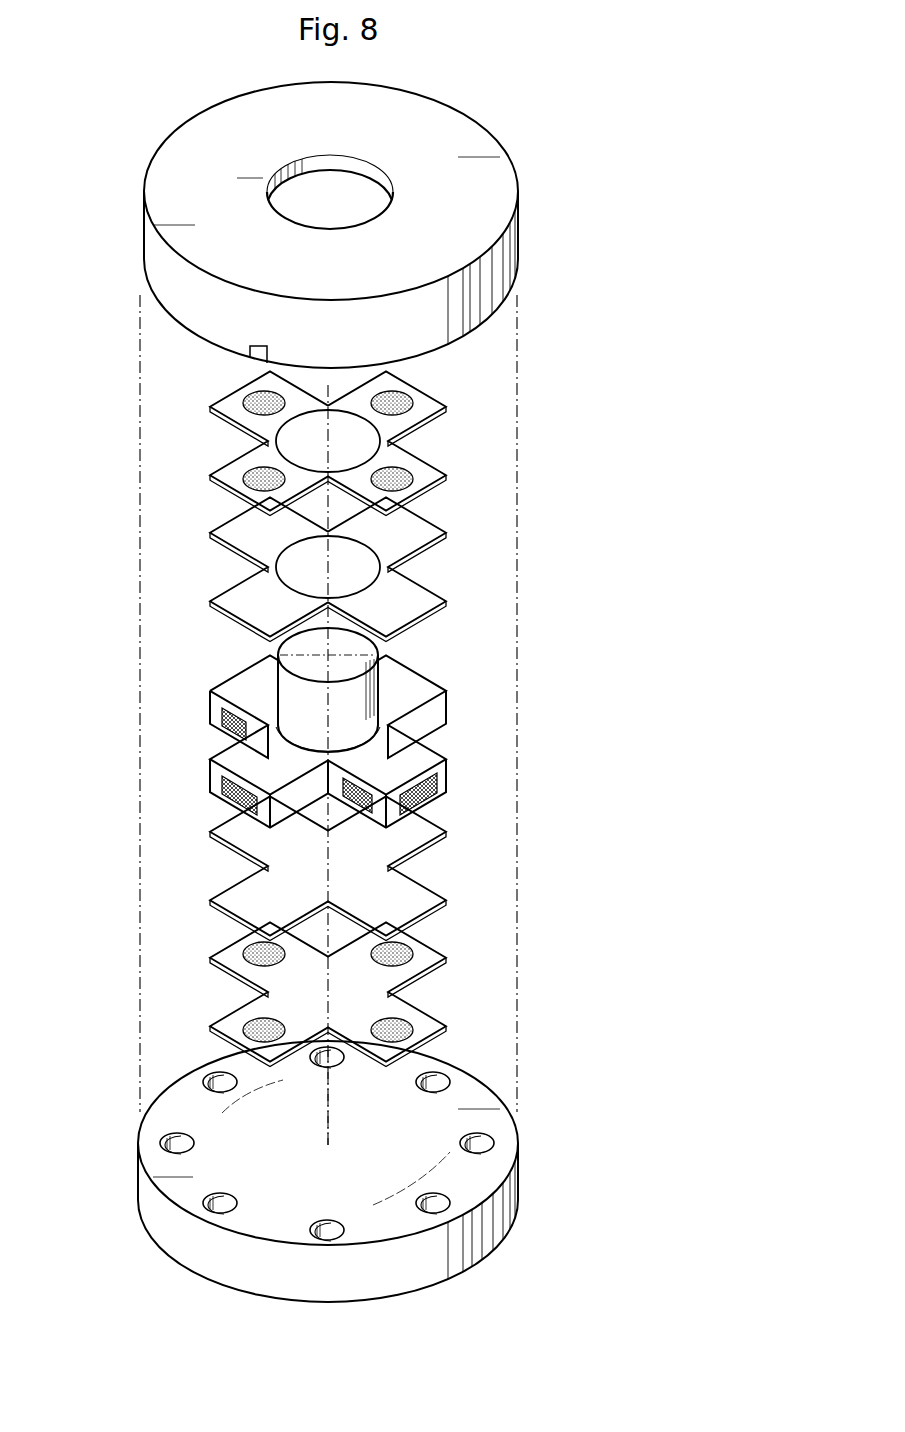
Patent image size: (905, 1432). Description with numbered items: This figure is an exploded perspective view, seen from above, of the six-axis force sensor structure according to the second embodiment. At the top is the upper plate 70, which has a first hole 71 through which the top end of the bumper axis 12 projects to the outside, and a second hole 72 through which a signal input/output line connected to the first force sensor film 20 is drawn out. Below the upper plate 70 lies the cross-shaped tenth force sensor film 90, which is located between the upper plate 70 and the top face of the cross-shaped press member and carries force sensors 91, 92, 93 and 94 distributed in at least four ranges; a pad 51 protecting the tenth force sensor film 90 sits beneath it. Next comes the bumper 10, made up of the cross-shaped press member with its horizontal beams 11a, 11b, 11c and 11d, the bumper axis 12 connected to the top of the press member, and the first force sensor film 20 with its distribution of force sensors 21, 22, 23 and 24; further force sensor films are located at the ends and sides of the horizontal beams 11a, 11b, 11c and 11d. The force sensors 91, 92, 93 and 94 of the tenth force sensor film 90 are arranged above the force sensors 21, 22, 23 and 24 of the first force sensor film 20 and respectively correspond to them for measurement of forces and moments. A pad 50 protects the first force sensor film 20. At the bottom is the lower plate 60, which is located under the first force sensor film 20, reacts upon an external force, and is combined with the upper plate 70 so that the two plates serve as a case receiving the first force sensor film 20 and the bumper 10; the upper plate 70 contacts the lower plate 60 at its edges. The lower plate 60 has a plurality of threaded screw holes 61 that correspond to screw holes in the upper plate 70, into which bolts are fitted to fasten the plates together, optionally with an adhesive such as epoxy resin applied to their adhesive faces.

The upper plate 70 is at (152, 262).
The first hole 71 is at (365, 200).
The second hole 72 is at (253, 362).
The tenth force sensor film 90 is at (235, 460).
The force sensor 91 is at (402, 470).
The force sensor 92 is at (400, 393).
The force sensor 93 is at (255, 402).
The force sensor 94 is at (242, 473).
The pad 51 is at (235, 592).
The bumper 10 is at (591, 621).
The horizontal beam 11a is at (434, 755).
The horizontal beam 11b is at (434, 690).
The horizontal beam 11c is at (222, 686).
The horizontal beam 11d is at (222, 760).
The bumper axis 12 is at (360, 636).
The pad 50 is at (237, 888).
The first force sensor film 20 is at (222, 970).
The force sensor 21 is at (402, 1024).
The force sensor 22 is at (402, 948).
The force sensor 23 is at (243, 950).
The force sensor 24 is at (242, 1022).
The lower plate 60 is at (153, 1213).
The screw holes 61 is at (162, 1145).